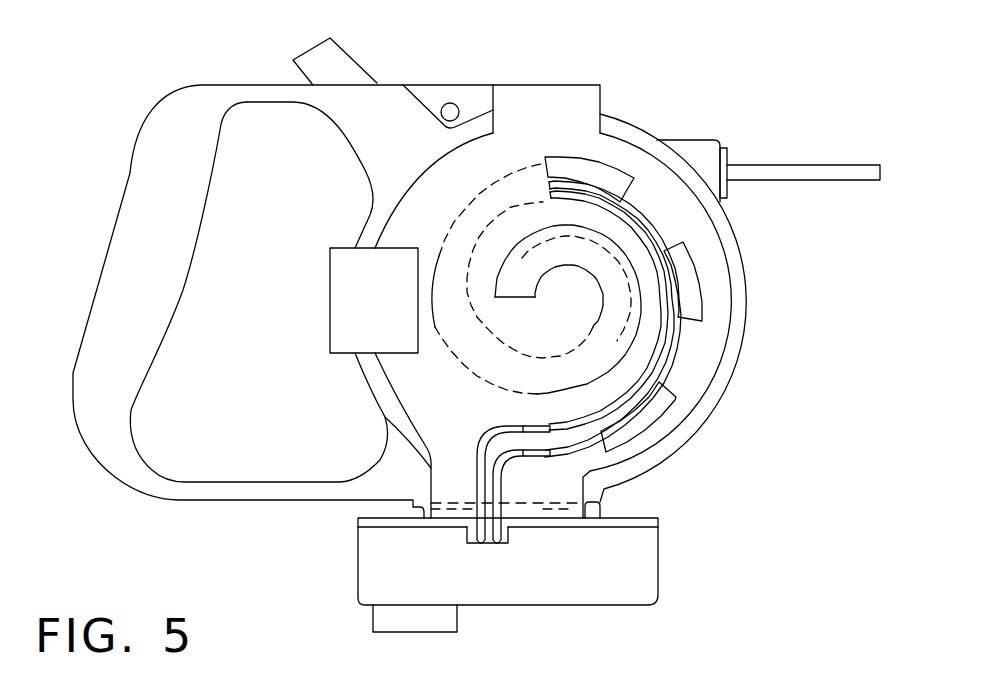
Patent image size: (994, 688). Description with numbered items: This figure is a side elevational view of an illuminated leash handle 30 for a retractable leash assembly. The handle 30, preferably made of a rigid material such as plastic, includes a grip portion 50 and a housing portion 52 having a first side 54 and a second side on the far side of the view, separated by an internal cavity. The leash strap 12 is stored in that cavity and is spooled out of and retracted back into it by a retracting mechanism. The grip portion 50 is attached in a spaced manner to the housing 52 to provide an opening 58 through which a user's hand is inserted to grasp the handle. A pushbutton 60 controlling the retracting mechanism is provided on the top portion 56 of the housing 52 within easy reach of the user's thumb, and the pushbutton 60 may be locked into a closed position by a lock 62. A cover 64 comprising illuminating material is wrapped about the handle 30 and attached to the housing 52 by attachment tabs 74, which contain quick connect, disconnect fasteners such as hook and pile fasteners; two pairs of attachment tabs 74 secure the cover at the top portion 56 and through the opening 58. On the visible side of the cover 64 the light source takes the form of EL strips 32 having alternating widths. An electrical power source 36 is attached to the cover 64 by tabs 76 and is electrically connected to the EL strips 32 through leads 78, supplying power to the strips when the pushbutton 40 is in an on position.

The leash strap 12 is at (768, 165).
The handle 30 is at (188, 532).
The strips 32 is at (707, 289).
The electrical power source 36 is at (548, 606).
The pushbutton 40 is at (396, 633).
The grip portion 50 is at (128, 178).
The housing portion 52 is at (647, 108).
The first side 54 is at (412, 156).
The top portion 56 is at (440, 76).
The opening 58 is at (275, 264).
The pushbutton 60 is at (352, 58).
The lock 62 is at (457, 103).
The cover 64 is at (700, 224).
The attachment tabs 74 is at (553, 83).
The tabs 76 is at (602, 510).
The leads 78 is at (481, 542).